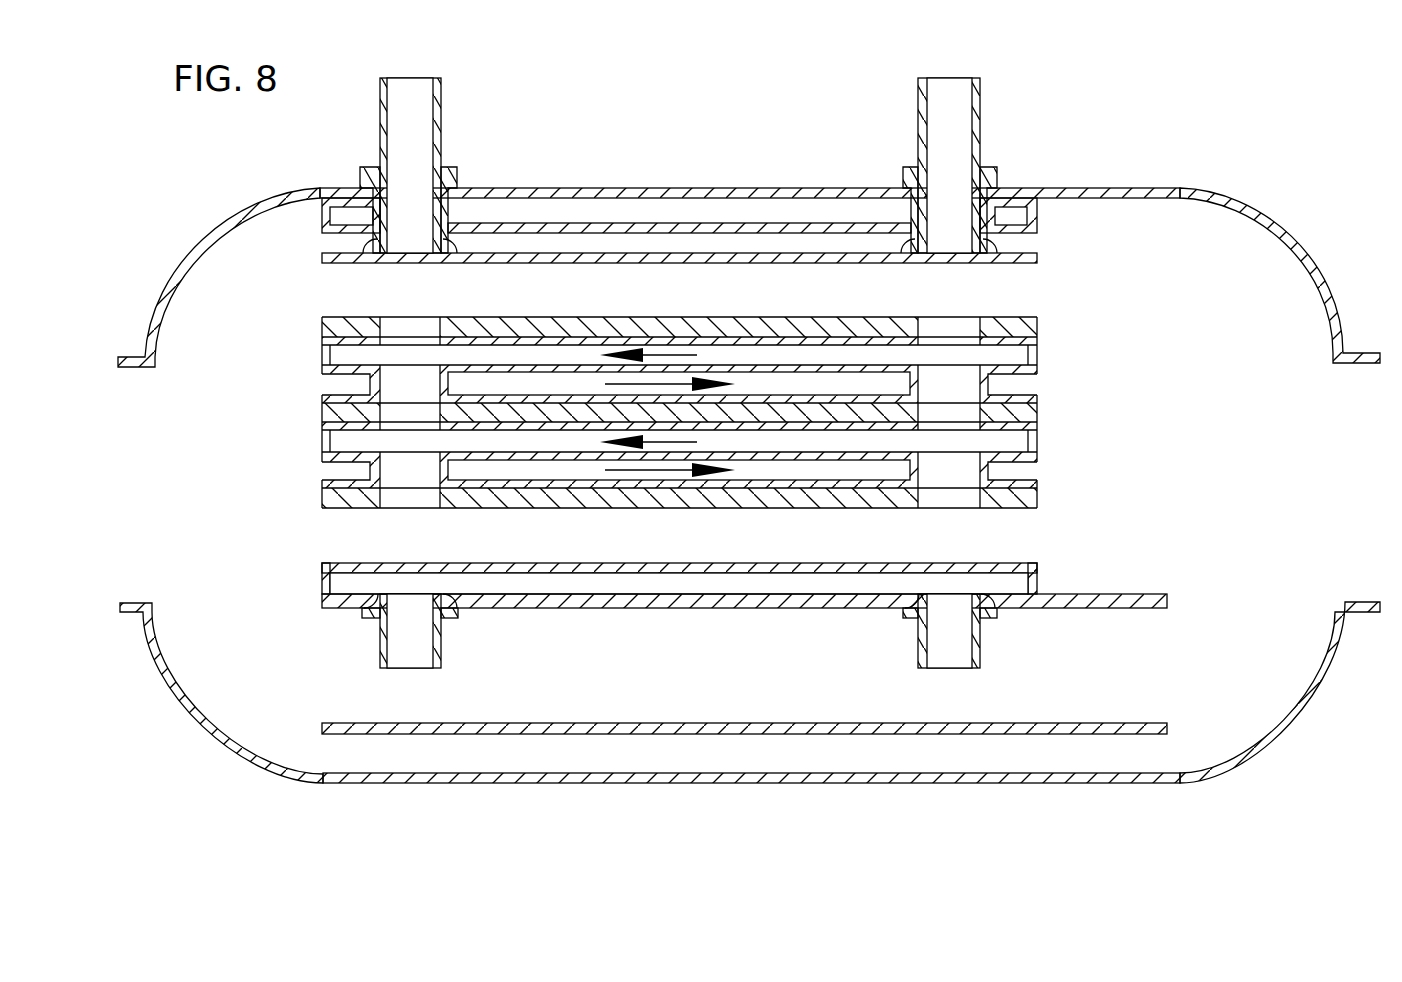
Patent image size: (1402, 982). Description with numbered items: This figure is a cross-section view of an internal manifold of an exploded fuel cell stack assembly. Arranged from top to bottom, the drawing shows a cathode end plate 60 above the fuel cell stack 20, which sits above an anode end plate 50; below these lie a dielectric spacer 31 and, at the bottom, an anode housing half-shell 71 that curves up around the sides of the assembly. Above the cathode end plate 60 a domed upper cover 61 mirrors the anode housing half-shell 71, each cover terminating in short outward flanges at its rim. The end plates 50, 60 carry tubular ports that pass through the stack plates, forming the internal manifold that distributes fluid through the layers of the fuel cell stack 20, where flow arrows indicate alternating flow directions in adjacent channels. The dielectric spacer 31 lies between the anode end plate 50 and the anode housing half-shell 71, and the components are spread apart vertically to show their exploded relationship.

The fuel cell stack 20 is at (1040, 440).
The dielectric spacer 31 is at (1157, 722).
The anode end plate 50 is at (1037, 587).
The cathode end plate 60 is at (323, 223).
The upper cover 61 is at (1227, 193).
The anode housing half-shell 71 is at (1237, 763).